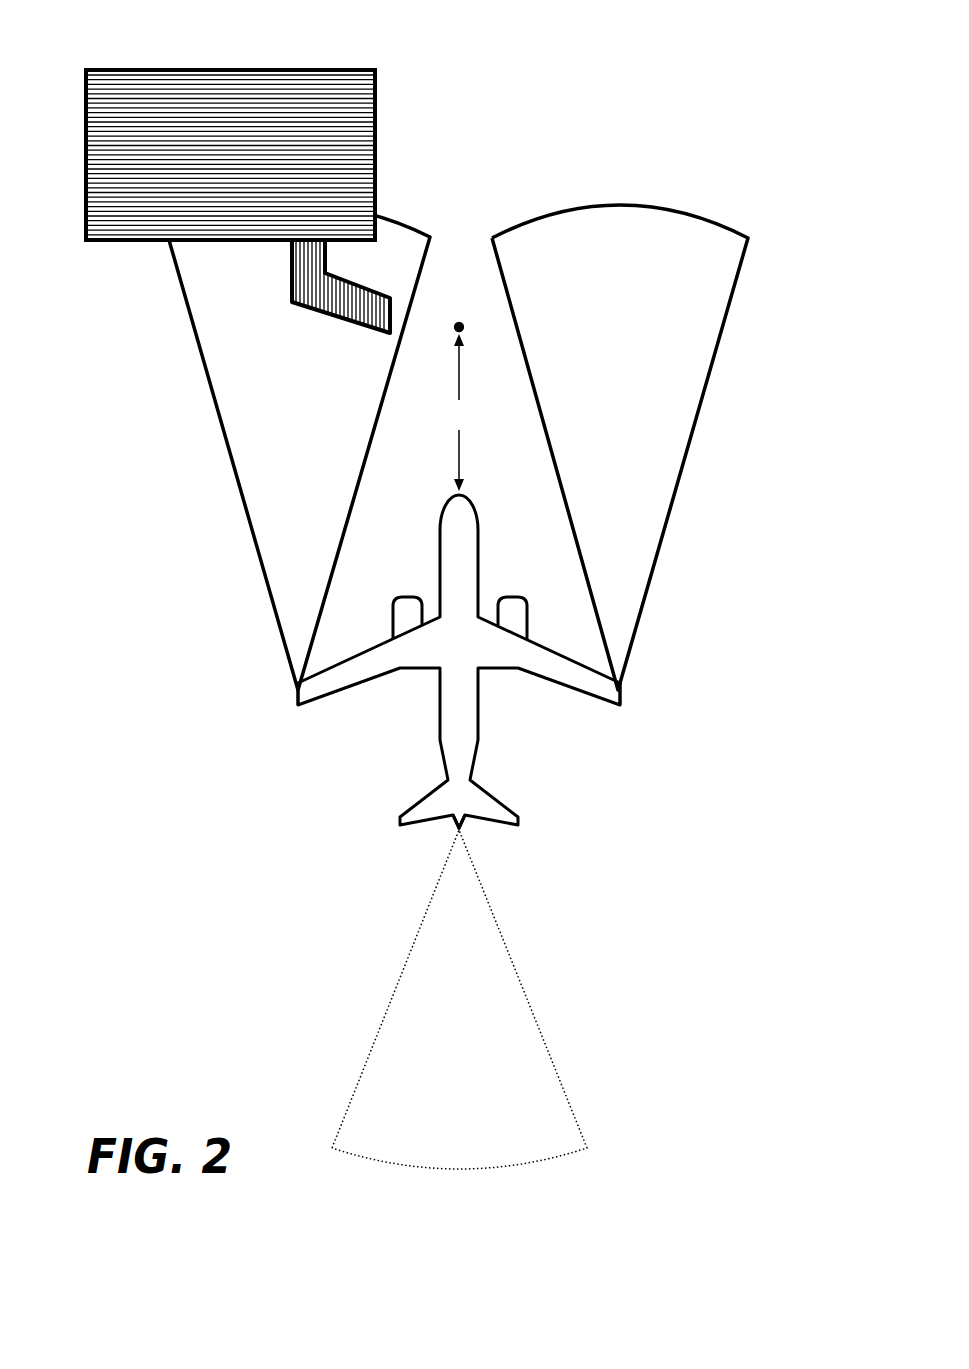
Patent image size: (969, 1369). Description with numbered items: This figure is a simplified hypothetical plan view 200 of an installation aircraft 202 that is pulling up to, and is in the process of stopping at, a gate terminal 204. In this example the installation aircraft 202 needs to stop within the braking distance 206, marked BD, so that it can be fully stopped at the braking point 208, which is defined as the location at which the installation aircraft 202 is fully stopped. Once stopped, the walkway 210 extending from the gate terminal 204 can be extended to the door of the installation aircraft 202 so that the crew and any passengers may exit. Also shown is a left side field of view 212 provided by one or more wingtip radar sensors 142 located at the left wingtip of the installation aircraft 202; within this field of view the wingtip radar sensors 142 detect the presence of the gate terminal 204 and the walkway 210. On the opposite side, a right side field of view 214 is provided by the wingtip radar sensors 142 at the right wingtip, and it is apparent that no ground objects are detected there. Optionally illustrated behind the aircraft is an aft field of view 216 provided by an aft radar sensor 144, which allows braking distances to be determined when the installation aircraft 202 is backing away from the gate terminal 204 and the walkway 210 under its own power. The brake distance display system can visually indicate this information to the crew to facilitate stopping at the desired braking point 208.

The simplified hypothetical plan view 200 is at (742, 924).
The installation aircraft 202 is at (478, 745).
The gate terminal 204 is at (376, 92).
The braking distance (BD) 206 is at (483, 458).
The braking point 208 is at (459, 323).
The walkway 210 is at (325, 311).
The left side FOV 212 is at (250, 530).
The second antenna beam 214 is at (668, 528).
The aft FOV 216 is at (530, 1007).
The wingtip radar sensors 142 is at (298, 692).
The aft radar sensor 144 is at (459, 830).